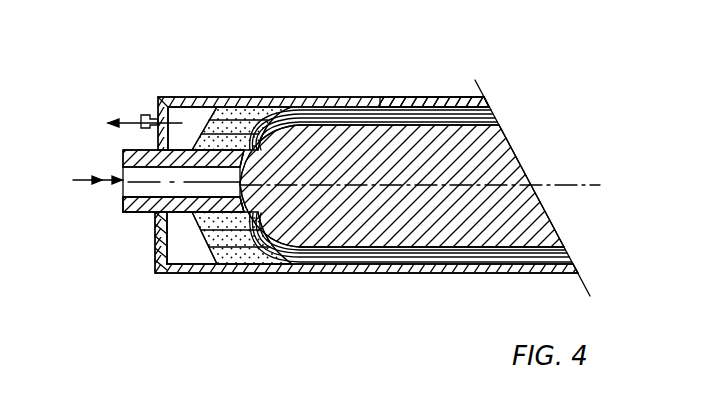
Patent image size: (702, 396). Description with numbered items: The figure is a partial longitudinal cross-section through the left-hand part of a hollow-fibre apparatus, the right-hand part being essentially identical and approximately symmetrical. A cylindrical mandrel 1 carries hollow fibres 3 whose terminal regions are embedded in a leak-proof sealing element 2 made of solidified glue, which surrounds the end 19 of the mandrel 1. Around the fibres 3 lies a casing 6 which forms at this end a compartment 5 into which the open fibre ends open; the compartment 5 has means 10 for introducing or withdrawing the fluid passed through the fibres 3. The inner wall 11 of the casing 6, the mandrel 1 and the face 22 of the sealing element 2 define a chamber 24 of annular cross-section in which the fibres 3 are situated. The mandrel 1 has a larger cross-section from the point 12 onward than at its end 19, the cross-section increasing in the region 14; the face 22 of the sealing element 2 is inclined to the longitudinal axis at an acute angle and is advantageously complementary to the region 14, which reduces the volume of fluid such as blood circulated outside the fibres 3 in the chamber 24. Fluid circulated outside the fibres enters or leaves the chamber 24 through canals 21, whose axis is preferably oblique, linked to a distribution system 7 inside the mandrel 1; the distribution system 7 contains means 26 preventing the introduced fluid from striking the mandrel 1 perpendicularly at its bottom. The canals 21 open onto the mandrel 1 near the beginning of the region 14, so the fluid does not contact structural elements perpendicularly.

The mandrel 1 is at (372, 133).
The sealing element 2 is at (233, 99).
The hollow fibres 3 is at (297, 126).
The compartment 5 is at (190, 120).
The casing 6 is at (426, 104).
The distribution system 7 is at (133, 178).
The means for introduction or withdrawal of fluid 10 is at (145, 116).
The inner wall of the casing 11 is at (322, 248).
The point of larger cross-section 12 is at (270, 238).
The region of increasing cross-section 14 is at (241, 186).
The end of the mandrel 19 is at (132, 203).
The canals 21 is at (248, 197).
The inner face of the sealing element 22 is at (268, 210).
The chamber 24 is at (382, 250).
The means of preventing perpendicular contact 26 is at (408, 251).